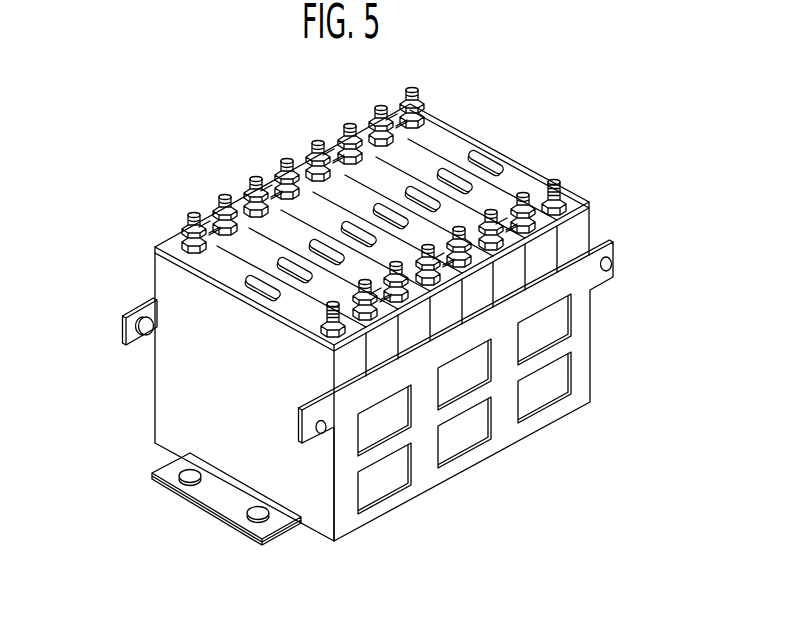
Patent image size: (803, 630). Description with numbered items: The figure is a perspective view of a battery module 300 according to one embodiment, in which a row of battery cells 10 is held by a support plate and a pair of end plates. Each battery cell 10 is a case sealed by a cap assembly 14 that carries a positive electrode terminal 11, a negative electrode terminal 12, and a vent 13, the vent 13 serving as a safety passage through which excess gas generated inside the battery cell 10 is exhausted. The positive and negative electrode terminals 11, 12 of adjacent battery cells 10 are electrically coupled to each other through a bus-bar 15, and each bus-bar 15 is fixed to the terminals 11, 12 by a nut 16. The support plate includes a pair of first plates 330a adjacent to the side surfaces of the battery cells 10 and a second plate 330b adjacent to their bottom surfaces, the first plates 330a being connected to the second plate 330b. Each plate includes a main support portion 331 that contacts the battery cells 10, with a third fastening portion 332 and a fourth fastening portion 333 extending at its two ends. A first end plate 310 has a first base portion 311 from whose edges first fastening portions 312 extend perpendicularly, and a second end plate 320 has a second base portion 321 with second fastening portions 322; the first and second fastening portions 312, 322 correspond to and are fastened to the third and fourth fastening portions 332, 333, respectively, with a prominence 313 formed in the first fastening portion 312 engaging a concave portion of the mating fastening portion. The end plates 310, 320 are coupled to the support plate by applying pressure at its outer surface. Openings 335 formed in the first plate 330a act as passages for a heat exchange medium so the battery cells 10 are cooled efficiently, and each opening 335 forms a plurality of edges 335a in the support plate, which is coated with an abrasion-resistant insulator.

The battery cell 10 is at (534, 387).
The positive electrode terminal 11 is at (413, 95).
The negative electrode terminal 12 is at (553, 178).
The vent 13 is at (479, 159).
The cap assembly 14 is at (525, 177).
The bus-bar 15 is at (210, 231).
The nut 16 is at (257, 194).
The battery module 300 is at (619, 101).
The first end plate 310 is at (72, 378).
The first base portion 311 is at (167, 408).
The first fastening portion 312 is at (137, 346).
The prominence 313 is at (180, 479).
The second end plate 320 is at (668, 166).
The second base portion 321 is at (590, 199).
The second fastening portion 322 is at (603, 240).
The first plate 330a is at (131, 299).
The second plate 330b is at (283, 540).
The main support portion 331 is at (447, 346).
The third fastening portion 332 is at (337, 452).
The fourth fastening portion 333 is at (612, 245).
The opening 335 is at (378, 430).
The edge 335a is at (457, 455).